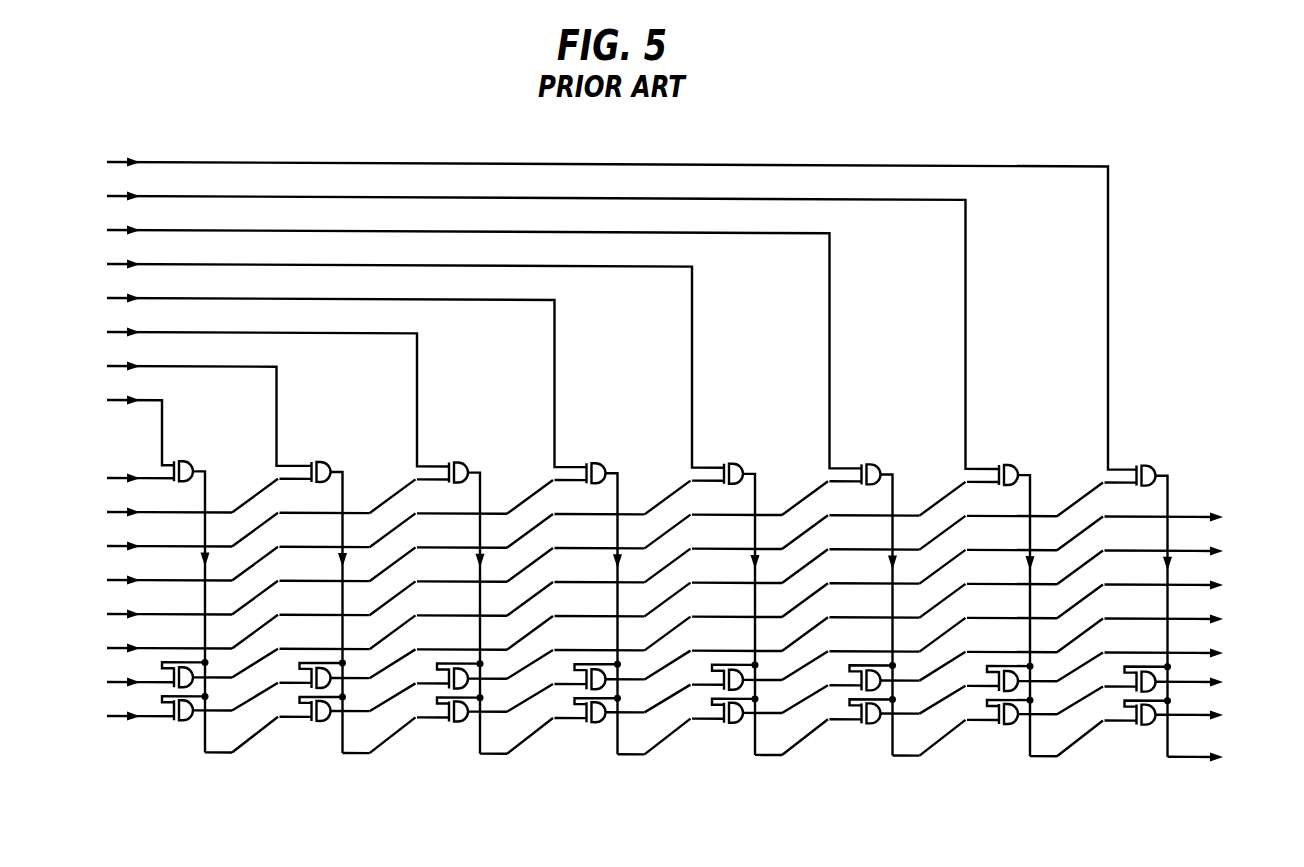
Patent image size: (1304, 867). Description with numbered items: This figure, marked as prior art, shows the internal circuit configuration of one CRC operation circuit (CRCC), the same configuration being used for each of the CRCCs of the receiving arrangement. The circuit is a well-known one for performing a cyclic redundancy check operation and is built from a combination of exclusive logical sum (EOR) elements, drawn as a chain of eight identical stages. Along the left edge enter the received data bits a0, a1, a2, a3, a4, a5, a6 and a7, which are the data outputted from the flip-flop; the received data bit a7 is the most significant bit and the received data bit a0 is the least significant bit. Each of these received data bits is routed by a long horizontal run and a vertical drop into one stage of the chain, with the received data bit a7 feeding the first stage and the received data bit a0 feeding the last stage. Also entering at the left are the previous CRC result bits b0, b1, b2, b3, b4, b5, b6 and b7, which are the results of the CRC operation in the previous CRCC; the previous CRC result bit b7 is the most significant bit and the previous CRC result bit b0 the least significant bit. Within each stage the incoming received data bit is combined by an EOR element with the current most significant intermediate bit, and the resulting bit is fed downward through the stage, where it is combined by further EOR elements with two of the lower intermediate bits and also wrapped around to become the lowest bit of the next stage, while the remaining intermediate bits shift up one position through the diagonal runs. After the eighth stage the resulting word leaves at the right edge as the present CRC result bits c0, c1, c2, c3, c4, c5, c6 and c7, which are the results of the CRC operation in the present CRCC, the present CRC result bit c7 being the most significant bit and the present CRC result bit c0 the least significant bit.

The received data bit a0 is at (604, 306).
The received data bit a1 is at (535, 323).
The received data bit a2 is at (467, 340).
The received data bit a3 is at (398, 356).
The received data bit a4 is at (329, 373).
The received data bit a5 is at (260, 390).
The received data bit a6 is at (192, 406).
The received data bit a7 is at (123, 423).
The previous CRC result bit b0 is at (106, 714).
The previous CRC result bit b1 is at (106, 680).
The previous CRC result bit b2 is at (106, 646).
The previous CRC result bit b3 is at (106, 612).
The previous CRC result bit b4 is at (106, 578).
The previous CRC result bit b5 is at (106, 544).
The previous CRC result bit b6 is at (106, 510).
The previous CRC result bit b7 is at (106, 476).
The present CRC result bit c0 is at (1225, 755).
The present CRC result bit c1 is at (1225, 713).
The present CRC result bit c2 is at (1225, 680).
The present CRC result bit c3 is at (1225, 651).
The present CRC result bit c4 is at (1225, 617).
The present CRC result bit c5 is at (1225, 583).
The present CRC result bit c6 is at (1225, 549).
The present CRC result bit c7 is at (1225, 515).